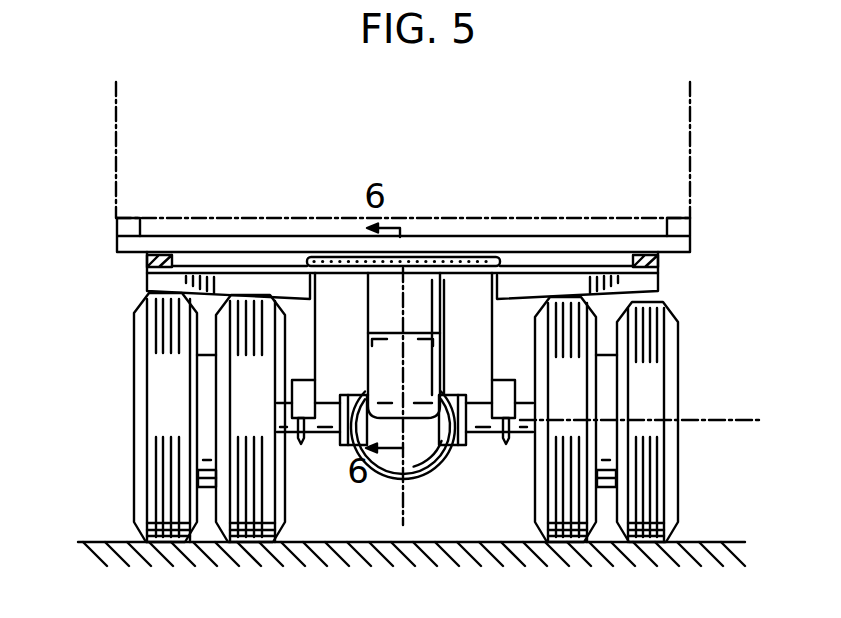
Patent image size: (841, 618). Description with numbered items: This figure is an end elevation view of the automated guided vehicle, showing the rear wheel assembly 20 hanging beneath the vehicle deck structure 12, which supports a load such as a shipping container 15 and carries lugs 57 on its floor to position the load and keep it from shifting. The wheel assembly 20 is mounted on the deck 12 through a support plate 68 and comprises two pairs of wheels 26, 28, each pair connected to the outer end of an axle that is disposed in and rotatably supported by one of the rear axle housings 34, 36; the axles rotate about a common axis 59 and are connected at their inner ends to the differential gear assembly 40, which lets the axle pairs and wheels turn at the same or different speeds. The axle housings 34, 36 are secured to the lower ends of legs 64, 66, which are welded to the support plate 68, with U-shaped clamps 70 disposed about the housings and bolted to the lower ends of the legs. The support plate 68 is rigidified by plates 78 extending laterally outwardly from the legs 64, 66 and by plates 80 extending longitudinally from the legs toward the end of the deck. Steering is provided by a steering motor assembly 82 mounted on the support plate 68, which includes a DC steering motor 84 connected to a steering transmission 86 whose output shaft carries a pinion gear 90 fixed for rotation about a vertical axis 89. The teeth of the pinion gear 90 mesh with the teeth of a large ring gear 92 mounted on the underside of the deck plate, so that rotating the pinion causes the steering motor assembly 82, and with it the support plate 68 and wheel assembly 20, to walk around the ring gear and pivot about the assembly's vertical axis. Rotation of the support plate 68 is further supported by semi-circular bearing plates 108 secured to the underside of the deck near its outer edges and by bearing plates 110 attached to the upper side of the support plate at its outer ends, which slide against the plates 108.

The vehicle deck structure 12 is at (520, 230).
The shipping container 15 is at (690, 111).
The rear wheel assembly 20 is at (693, 293).
The pair of wheels 26 is at (640, 508).
The pair of wheels 28 is at (245, 502).
The rear axle housing 34 is at (480, 442).
The rear axle housing 36 is at (328, 442).
The differential gear assembly 40 is at (395, 470).
The lugs 57 is at (124, 229).
The common axis 59 is at (712, 420).
The leg 64 is at (507, 373).
The leg 66 is at (300, 355).
The support plate 68 is at (213, 277).
The U-shaped clamps 70 is at (301, 444).
The plates 78 is at (268, 292).
The plates 80 is at (308, 290).
The steering motor assembly 82 is at (456, 328).
The steering motor 84 is at (372, 357).
The steering transmission 86 is at (378, 310).
The vertical axis 89 is at (407, 487).
The pinion gear 90 is at (409, 253).
The ring gear 92 is at (318, 256).
The bearing plates 108 is at (162, 256).
The bearing plates 110 is at (147, 270).